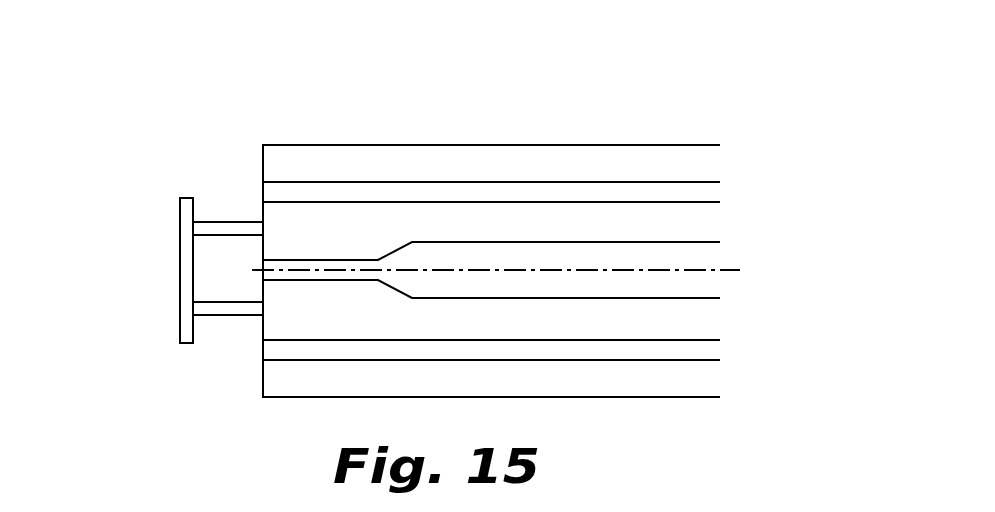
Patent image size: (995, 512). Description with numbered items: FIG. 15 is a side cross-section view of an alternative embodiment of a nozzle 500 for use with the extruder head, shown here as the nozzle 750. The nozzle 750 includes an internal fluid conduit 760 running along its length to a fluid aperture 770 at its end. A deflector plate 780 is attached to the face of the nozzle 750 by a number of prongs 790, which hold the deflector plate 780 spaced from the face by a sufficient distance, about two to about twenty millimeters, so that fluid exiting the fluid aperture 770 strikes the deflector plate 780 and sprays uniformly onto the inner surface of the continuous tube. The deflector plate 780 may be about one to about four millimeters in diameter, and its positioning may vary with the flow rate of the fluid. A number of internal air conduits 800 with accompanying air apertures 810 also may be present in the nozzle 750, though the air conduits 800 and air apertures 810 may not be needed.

The nozzle 500 is at (275, 95).
The nozzle 750 is at (398, 143).
The internal fluid conduit 760 is at (598, 242).
The fluid aperture 770 is at (263, 263).
The deflector plate 780 is at (178, 238).
The prongs 790 is at (215, 222).
The internal air conduits 800 is at (557, 202).
The air apertures 810 is at (263, 182).